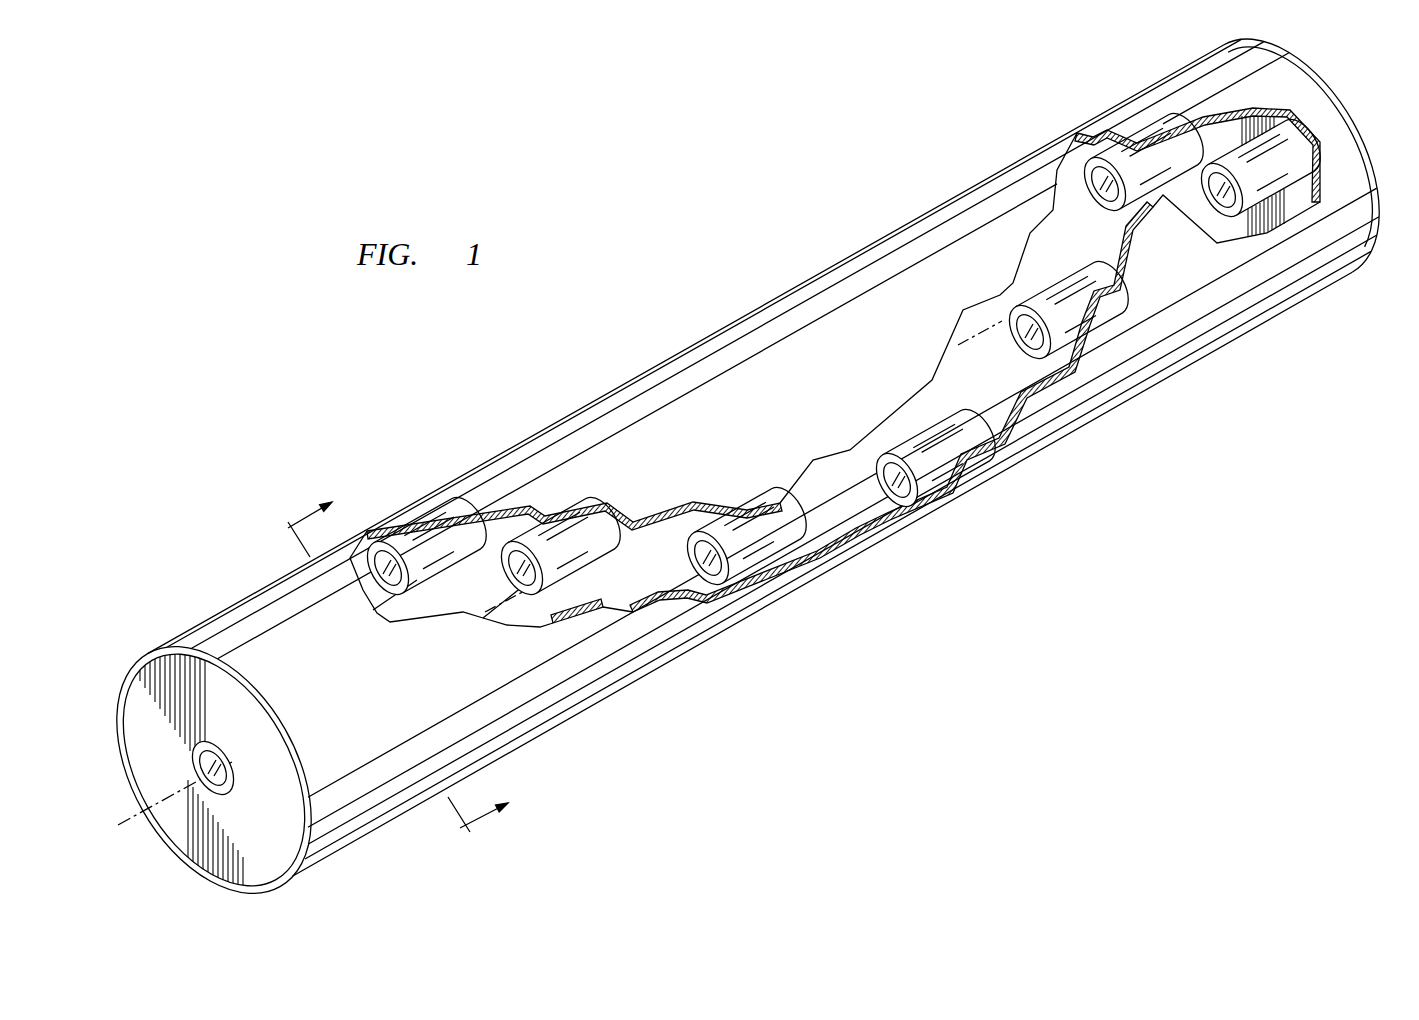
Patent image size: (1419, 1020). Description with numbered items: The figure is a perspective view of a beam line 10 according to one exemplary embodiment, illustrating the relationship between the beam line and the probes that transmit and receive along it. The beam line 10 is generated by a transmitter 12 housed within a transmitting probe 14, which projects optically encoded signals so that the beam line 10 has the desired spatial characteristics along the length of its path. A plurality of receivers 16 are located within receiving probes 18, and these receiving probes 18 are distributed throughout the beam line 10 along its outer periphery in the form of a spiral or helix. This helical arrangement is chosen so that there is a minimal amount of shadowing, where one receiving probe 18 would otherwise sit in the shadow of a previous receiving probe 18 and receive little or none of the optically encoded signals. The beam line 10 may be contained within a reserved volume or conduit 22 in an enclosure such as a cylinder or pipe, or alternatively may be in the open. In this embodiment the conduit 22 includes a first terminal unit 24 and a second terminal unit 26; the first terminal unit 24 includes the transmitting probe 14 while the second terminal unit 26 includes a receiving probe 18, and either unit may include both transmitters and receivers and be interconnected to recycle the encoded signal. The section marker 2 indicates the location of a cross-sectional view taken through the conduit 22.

The section line 2- 2 is at (391, 675).
The beam line 10 is at (617, 533).
The transmitter 12 is at (207, 769).
The transmitting probe 14 is at (232, 795).
The receiver 16 is at (1222, 193).
The receiving probe 18 is at (1272, 185).
The conduit 22 is at (782, 426).
The first terminal unit 24 is at (267, 853).
The second terminal unit 26 is at (1296, 148).